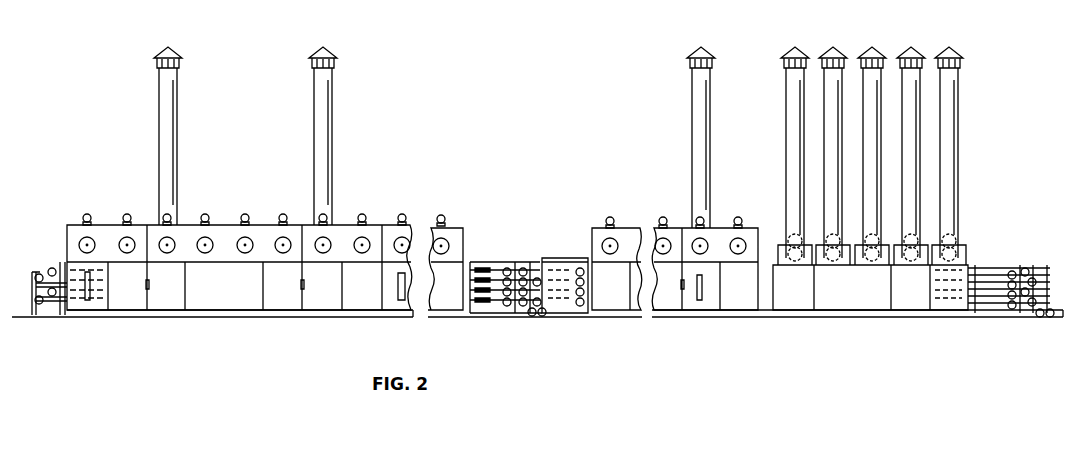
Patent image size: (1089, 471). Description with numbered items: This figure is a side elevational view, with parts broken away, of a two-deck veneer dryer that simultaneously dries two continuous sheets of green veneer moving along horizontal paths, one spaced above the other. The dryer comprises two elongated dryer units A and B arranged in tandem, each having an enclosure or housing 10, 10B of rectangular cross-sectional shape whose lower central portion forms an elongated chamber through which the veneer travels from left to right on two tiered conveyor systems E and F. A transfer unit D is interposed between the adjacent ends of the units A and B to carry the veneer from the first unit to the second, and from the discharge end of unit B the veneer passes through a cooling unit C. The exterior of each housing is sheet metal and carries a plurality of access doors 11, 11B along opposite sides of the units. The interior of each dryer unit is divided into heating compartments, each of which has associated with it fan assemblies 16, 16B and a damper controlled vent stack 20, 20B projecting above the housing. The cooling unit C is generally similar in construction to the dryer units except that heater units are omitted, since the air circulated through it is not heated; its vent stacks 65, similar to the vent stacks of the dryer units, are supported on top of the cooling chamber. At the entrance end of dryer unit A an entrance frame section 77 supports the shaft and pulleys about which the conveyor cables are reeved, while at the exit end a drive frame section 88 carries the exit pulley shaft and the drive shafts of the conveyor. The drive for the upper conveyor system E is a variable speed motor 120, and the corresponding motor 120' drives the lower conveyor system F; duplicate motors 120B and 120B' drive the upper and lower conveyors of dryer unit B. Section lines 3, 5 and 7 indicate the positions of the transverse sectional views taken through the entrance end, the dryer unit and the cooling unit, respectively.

The dryer unit A is at (352, 217).
The dryer unit B is at (712, 224).
The cooling unit C is at (966, 240).
The transfer unit D is at (545, 252).
The conveyor system E is at (1015, 268).
The conveyor system F is at (1050, 268).
The section line 3- 3 is at (8, 260).
The section line 5- 5 is at (222, 345).
The section line 7- 7 is at (852, 350).
The housing 10 is at (67, 246).
The housing 10B is at (760, 228).
The access doors 11 is at (288, 303).
The access doors 11B is at (668, 305).
The fan assemblies 16 is at (125, 214).
The fan assemblies 16B is at (660, 214).
The damper controlled vent stack 20 is at (176, 141).
The damper controlled vent stack 20B is at (707, 140).
The vent stack 65 is at (955, 143).
The entrance frame section 77 is at (33, 316).
The drive frame section 88 is at (541, 262).
The variable speed motor 120 is at (563, 332).
The variable speed motor 120' is at (504, 332).
The variable speed motor 120B is at (1032, 342).
The variable speed motor 120B' is at (1007, 333).